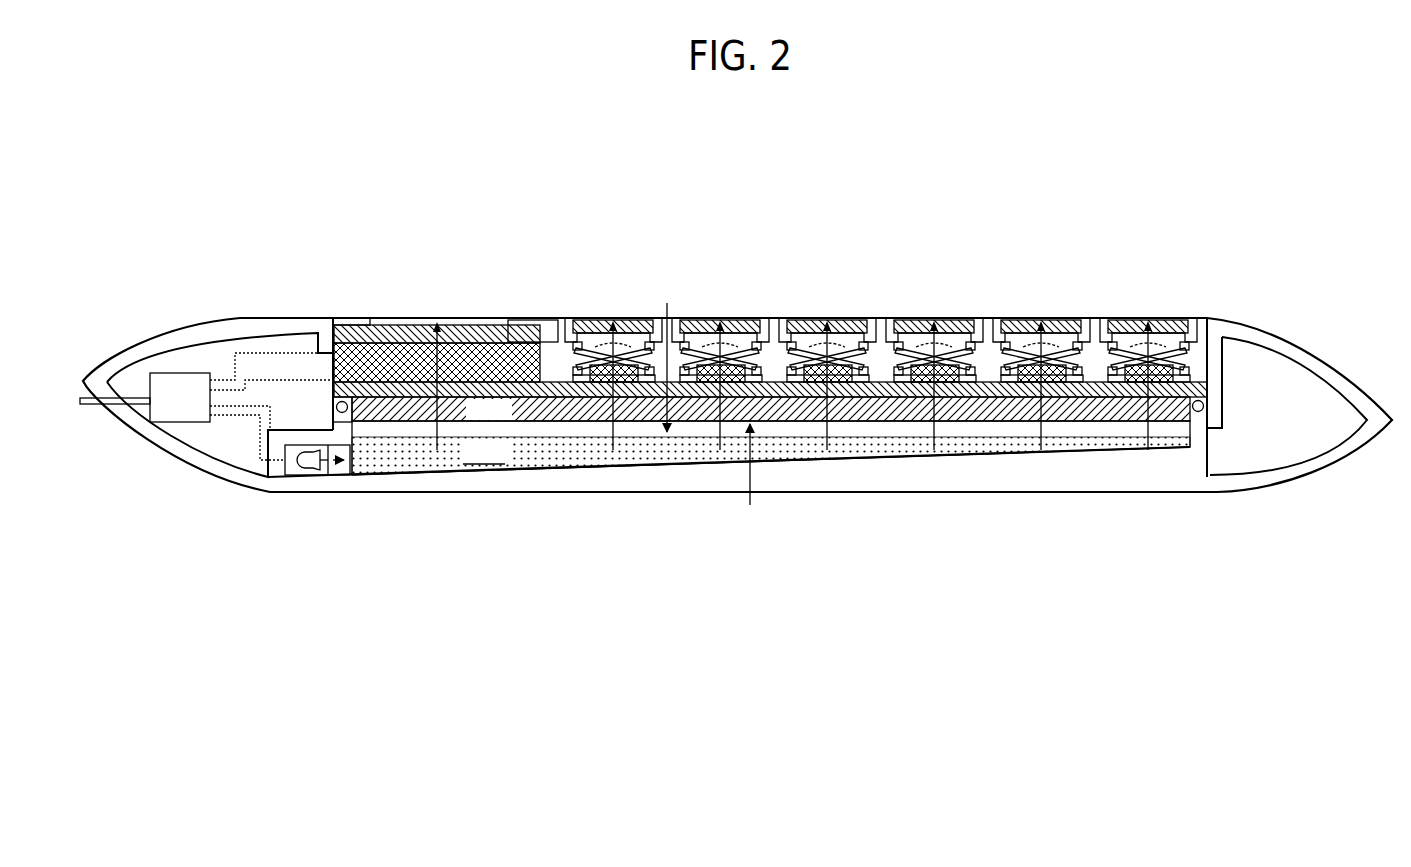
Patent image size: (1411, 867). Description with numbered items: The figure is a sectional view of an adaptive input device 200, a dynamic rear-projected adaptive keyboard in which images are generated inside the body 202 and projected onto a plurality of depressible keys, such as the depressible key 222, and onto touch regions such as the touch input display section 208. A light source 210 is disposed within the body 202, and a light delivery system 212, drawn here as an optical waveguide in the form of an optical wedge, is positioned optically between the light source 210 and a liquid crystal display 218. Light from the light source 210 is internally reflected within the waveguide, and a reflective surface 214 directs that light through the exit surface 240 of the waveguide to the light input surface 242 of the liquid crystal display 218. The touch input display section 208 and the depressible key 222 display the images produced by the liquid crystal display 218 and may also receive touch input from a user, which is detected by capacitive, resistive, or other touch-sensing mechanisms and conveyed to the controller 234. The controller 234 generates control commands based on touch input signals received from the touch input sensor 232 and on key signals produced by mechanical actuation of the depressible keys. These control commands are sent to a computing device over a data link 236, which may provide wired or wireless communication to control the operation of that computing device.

The adaptive input device 200 is at (200, 224).
The body 202 is at (1135, 493).
The touch input display section 208 is at (480, 325).
The light source 210 is at (317, 469).
The light delivery system 212 is at (505, 464).
The reflective surface 214 is at (477, 479).
The liquid crystal display 218 is at (778, 410).
The depressible key 222 is at (1204, 303).
The touch input sensor 232 is at (326, 328).
The controller 234 is at (201, 411).
The data link 236 is at (92, 410).
The exit surface 240 is at (673, 354).
The light input surface 242 is at (751, 482).